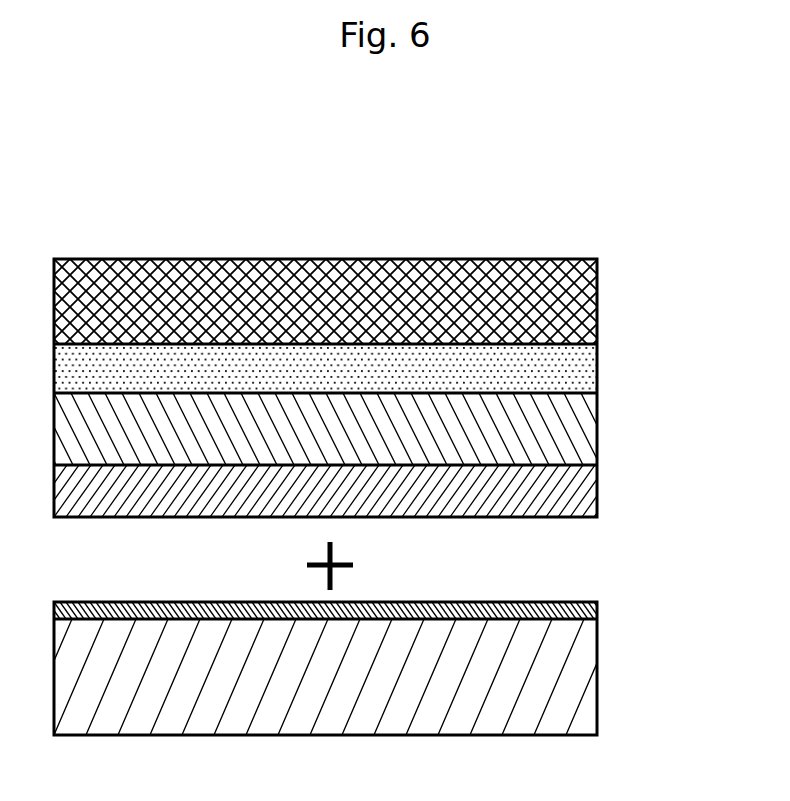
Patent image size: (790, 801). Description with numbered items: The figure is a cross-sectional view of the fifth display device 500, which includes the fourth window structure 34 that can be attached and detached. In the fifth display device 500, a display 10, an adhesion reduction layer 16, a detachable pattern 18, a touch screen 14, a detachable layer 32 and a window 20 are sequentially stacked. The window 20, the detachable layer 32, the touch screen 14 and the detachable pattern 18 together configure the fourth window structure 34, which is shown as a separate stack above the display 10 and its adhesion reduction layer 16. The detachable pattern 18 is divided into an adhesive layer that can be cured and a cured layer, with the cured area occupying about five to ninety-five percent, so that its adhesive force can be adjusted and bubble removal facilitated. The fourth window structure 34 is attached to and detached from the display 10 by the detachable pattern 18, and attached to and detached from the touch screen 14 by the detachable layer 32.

The fifth display device 500 is at (145, 218).
The fourth window structure 34 is at (385, 388).
The window 20 is at (597, 302).
The detachable layer 32 is at (597, 372).
The touch screen 14 is at (597, 433).
The detachable pattern 18 is at (356, 491).
The adhesion reduction layer 16 is at (597, 613).
The display 10 is at (597, 677).